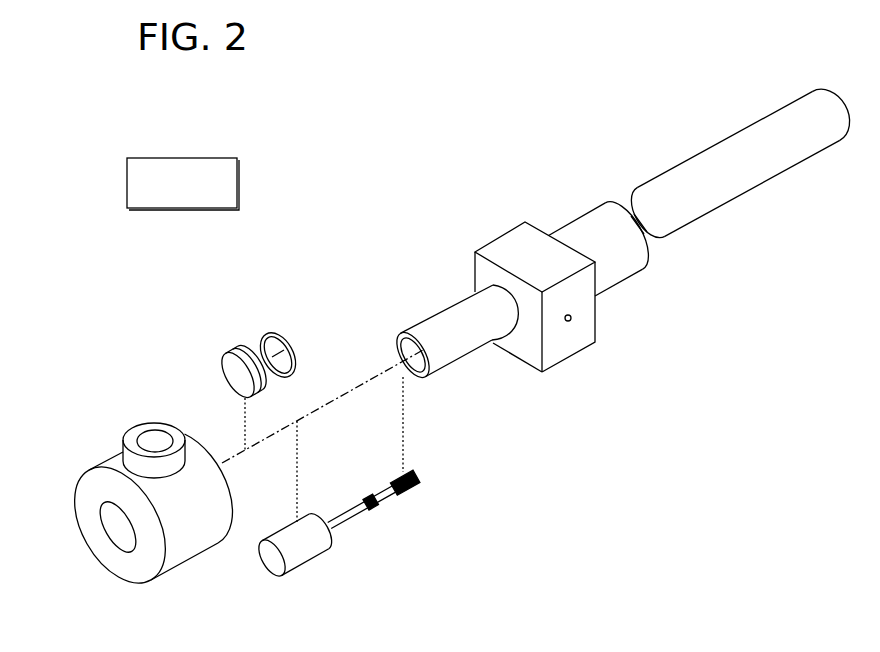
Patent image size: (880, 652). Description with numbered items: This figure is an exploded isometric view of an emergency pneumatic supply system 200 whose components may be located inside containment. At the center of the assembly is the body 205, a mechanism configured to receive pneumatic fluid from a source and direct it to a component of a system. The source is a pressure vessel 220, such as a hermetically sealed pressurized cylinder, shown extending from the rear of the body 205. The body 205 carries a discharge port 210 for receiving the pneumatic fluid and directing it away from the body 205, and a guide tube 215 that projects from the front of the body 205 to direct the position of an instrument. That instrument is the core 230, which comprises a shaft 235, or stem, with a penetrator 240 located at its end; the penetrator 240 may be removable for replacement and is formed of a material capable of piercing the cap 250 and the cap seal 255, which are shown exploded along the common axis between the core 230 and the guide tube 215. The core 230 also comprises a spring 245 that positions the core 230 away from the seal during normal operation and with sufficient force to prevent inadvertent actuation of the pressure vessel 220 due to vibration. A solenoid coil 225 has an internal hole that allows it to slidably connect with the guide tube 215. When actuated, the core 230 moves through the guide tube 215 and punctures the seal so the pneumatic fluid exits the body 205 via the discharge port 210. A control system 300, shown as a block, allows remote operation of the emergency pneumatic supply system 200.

The emergency pneumatic supply system 200 is at (653, 502).
The body 205 is at (563, 373).
The discharge port 210 is at (577, 325).
The guide tube 215 is at (428, 313).
The pressure vessel 220 is at (723, 183).
The solenoid coil 225 is at (105, 455).
The core 230 is at (262, 569).
The shaft 235 is at (358, 523).
The penetrator 240 is at (378, 510).
The spring 245 is at (420, 490).
The cap 250 is at (221, 362).
The cap seal 255 is at (270, 336).
The control system 300 is at (201, 196).